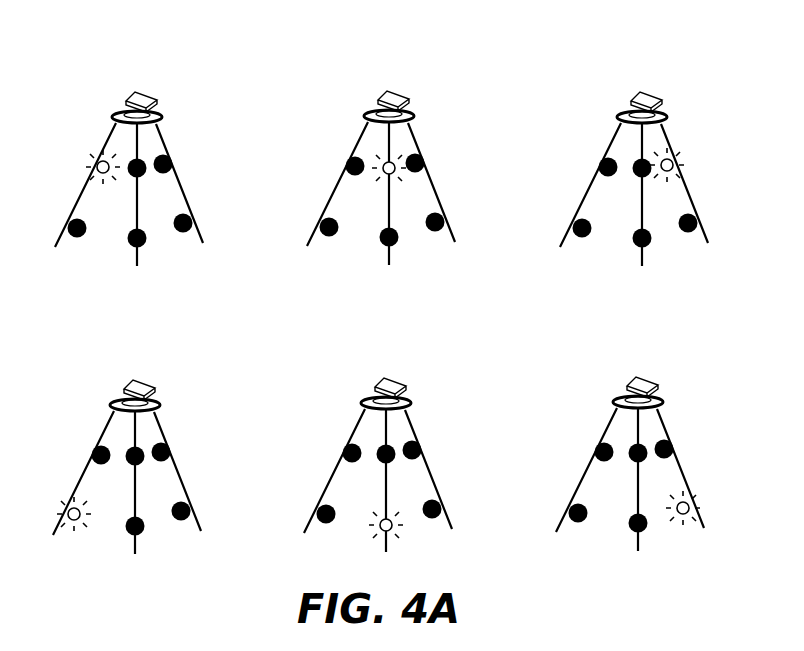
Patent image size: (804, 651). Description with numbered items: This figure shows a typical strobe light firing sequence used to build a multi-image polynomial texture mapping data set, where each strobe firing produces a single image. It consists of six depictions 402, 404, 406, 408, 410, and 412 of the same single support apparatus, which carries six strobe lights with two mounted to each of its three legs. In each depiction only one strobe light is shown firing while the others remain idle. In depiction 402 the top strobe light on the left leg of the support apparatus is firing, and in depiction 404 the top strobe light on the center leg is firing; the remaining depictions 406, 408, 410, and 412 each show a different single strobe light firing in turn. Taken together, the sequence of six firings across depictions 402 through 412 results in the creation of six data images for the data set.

The depiction 402 is at (110, 68).
The depiction 404 is at (362, 68).
The depiction 406 is at (612, 65).
The depiction 408 is at (107, 362).
The depiction 410 is at (362, 360).
The depiction 412 is at (612, 360).